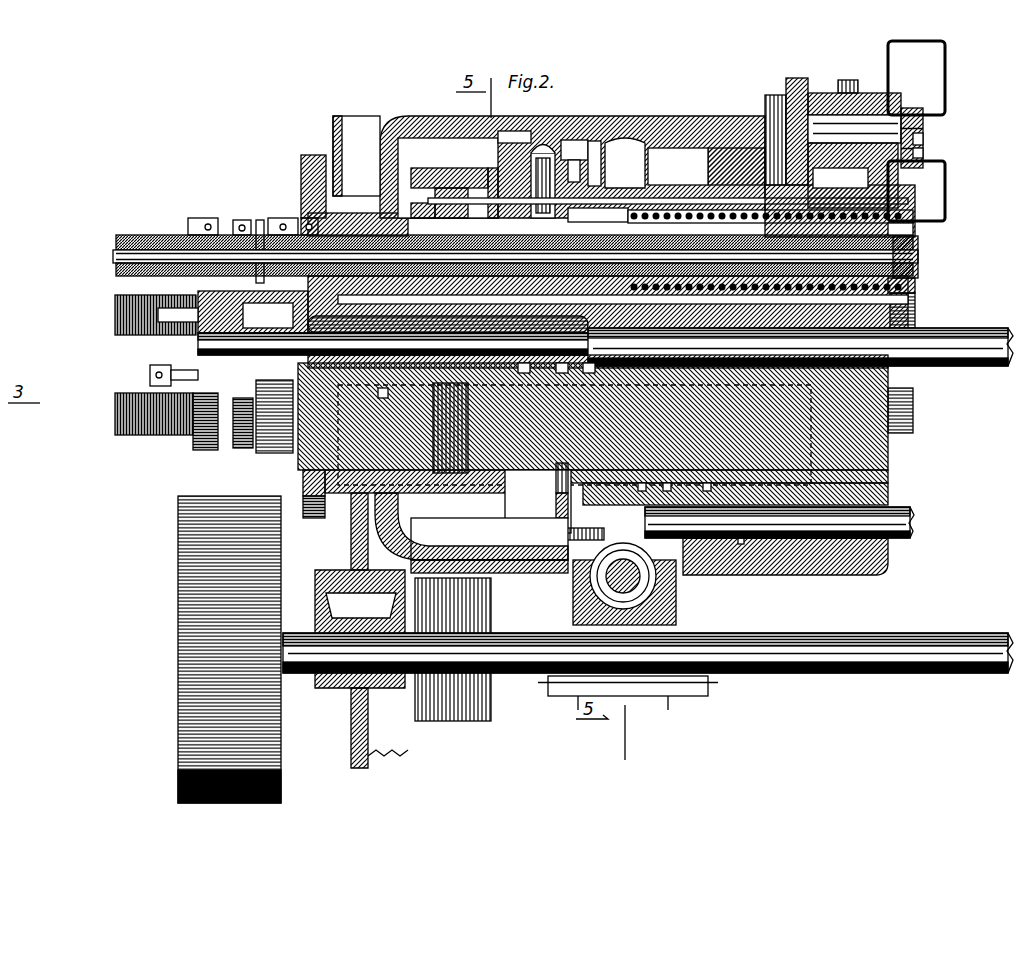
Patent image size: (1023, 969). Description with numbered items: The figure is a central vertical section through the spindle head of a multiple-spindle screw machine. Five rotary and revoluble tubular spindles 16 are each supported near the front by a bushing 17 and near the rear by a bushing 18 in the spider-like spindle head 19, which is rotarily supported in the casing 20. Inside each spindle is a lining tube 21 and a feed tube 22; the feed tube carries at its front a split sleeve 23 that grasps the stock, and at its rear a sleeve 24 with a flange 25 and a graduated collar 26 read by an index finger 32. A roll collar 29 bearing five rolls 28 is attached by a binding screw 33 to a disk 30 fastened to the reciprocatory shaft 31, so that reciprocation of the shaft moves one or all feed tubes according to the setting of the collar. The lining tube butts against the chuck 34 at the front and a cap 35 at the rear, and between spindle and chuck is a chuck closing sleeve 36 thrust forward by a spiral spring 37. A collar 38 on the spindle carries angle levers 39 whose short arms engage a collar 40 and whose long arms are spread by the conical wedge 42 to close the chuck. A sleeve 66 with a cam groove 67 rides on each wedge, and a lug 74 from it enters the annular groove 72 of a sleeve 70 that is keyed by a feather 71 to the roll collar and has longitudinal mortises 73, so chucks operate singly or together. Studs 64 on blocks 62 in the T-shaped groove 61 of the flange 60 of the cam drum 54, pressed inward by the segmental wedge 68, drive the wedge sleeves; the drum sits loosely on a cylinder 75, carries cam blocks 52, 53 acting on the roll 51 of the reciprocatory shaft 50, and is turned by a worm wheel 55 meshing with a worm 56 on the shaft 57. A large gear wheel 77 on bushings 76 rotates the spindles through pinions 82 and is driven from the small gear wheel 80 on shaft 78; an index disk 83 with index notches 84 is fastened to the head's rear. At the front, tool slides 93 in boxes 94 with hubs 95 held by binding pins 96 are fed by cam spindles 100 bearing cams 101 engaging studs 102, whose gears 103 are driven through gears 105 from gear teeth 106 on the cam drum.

The tubular spindle 16 is at (903, 220).
The bushing 17 is at (878, 192).
The bushing 18 is at (350, 186).
The spindle head 19 is at (545, 583).
The casing 20 is at (692, 112).
The lining tube 21 is at (254, 212).
The feed tube 22 is at (108, 232).
The split sleeve 23 is at (910, 256).
The sleeve 24 is at (108, 263).
The flange 25 is at (234, 212).
The collar 26 is at (198, 210).
The rolls 28 is at (185, 274).
The roll collar 29 is at (108, 326).
The disk 30 is at (147, 328).
The reciprocatory shaft 31 is at (553, 315).
The index finger 32 is at (180, 217).
The binding screw 33 is at (142, 370).
The chuck 34 is at (912, 240).
The cap 35 is at (276, 210).
The chuck closing sleeve 36 is at (904, 219).
The spiral spring 37 is at (699, 192).
The collar 38 is at (741, 194).
The angle levers 39 is at (720, 166).
The collar 40 is at (800, 347).
The conical wedge 42 is at (670, 156).
The reciprocatory shaft 50 is at (779, 523).
The roll 51 is at (661, 475).
The cam block 52 is at (636, 476).
The cam block 53 is at (701, 476).
The cam drum 54 is at (735, 555).
The worm wheel 55 is at (626, 130).
The worm 56 is at (565, 580).
The shaft 57 is at (565, 595).
The flange 60 is at (548, 494).
The T-shaped groove 61 is at (548, 516).
The block 62 is at (568, 130).
The stud 64 is at (538, 130).
The chuck closing wedge sleeve 66 is at (678, 166).
The cam groove 67 is at (593, 128).
The segmental wedge 68 is at (505, 122).
The sleeve 70 is at (381, 394).
The feather 71 is at (416, 438).
The annular groove 72 is at (513, 356).
The longitudinal mortises 73 is at (555, 356).
The lug 74 is at (580, 356).
The cylinder 75 is at (788, 555).
The bushings 76 is at (426, 464).
The large gear or sprocket wheel 77 is at (504, 515).
The shaft 78 is at (648, 653).
The small gear or sprocket wheel 80 is at (465, 712).
The pinion 82 is at (425, 130).
The index disk 83 is at (305, 146).
The index notches 84 is at (305, 512).
The tool slide 93 is at (916, 112).
The box 94 is at (916, 78).
The cylindrical hub 95 is at (854, 100).
The binding pin 96 is at (842, 72).
The cam spindle 100 is at (790, 72).
The cam 101 is at (918, 132).
The stud 102 is at (918, 146).
The gear 103 is at (772, 86).
The gear 105 is at (766, 88).
The gear teeth 106 is at (853, 175).